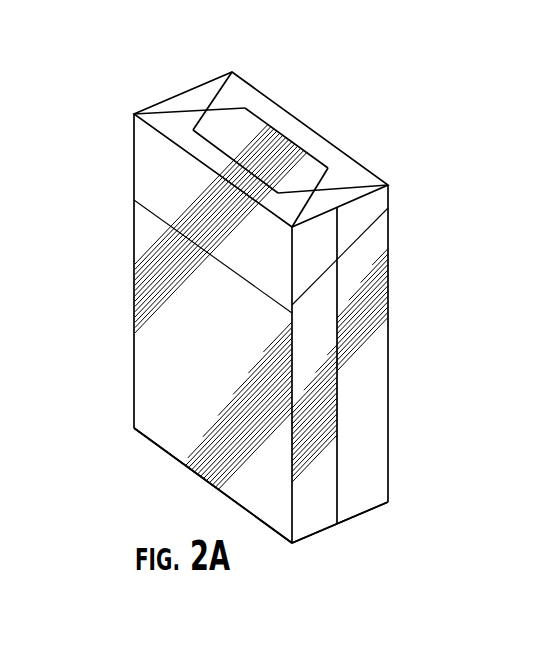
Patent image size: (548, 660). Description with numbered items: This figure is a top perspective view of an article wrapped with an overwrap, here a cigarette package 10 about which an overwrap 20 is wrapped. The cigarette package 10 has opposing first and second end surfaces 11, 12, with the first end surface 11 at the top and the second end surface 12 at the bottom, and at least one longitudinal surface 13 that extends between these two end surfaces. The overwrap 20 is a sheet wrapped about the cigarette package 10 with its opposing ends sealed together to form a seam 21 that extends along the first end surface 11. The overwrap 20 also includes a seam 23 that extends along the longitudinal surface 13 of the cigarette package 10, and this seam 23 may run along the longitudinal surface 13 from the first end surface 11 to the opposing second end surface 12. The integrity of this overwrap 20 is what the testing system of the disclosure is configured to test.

The cigarette package 10 is at (267, 312).
The first end surface 11 is at (340, 180).
The second end surface 12 is at (312, 552).
The longitudinal surface 13 is at (375, 308).
The overwrap 20 is at (170, 302).
The seam 21 is at (200, 92).
The seam 23 is at (352, 378).